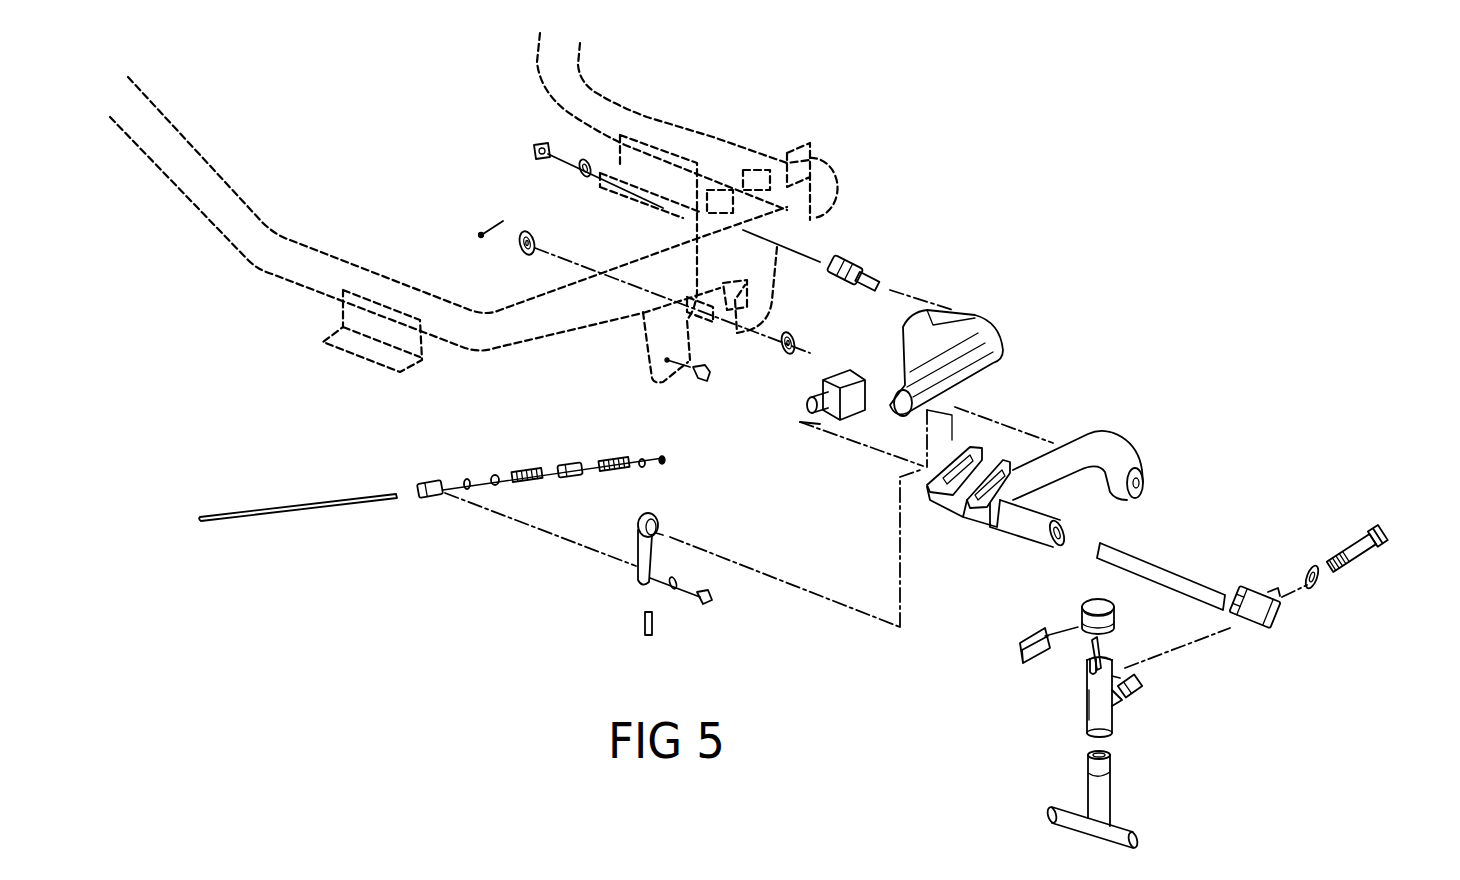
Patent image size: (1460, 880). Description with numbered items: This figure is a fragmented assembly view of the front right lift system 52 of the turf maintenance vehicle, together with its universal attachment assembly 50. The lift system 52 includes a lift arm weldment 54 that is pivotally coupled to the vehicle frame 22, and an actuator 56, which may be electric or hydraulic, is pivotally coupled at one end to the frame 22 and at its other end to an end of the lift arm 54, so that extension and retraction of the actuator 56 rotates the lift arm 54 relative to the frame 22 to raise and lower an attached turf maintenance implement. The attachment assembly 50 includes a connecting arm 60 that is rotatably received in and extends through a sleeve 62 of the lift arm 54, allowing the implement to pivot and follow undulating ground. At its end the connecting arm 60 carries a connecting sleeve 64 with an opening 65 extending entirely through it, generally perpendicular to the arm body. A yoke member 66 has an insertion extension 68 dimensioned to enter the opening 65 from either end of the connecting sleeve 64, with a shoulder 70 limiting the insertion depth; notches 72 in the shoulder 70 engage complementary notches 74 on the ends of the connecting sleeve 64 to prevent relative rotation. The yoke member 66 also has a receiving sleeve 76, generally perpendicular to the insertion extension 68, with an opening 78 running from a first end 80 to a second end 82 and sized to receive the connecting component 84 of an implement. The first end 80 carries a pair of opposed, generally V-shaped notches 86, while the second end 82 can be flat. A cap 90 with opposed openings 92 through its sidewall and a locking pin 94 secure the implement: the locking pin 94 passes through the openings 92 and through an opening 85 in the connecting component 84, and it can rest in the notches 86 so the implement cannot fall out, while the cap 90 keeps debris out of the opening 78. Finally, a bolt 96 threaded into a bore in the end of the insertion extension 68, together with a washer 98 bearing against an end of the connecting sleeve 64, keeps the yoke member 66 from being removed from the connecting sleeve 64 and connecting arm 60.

The frame 22 is at (693, 130).
The universal attachment assembly 50 is at (1138, 245).
The lift system 52 is at (963, 230).
The lift arm weldment 54 is at (1113, 443).
The actuator 56 is at (957, 333).
The connecting arm 60 is at (1127, 563).
The sleeve 62 is at (1027, 525).
The connecting sleeve 64 is at (1262, 617).
The opening 65 is at (1238, 626).
The yoke member 66 is at (1093, 686).
The insertion extension 68 is at (1132, 683).
The shoulder 70 is at (1122, 700).
The notches 72 is at (1120, 677).
The notches 74 is at (1272, 596).
The receiving sleeve 76 is at (1088, 715).
The opening 78 is at (1102, 660).
The first end 80 is at (1108, 662).
The second end 82 is at (1087, 740).
The connecting component 84 is at (1087, 785).
The opening 85 is at (1113, 788).
The notches 86 is at (1085, 660).
The cap 90 is at (1093, 602).
The openings 92 is at (1082, 628).
The locking pin 94 is at (1020, 660).
The bolt 96 is at (1387, 540).
The washer 98 is at (1313, 588).